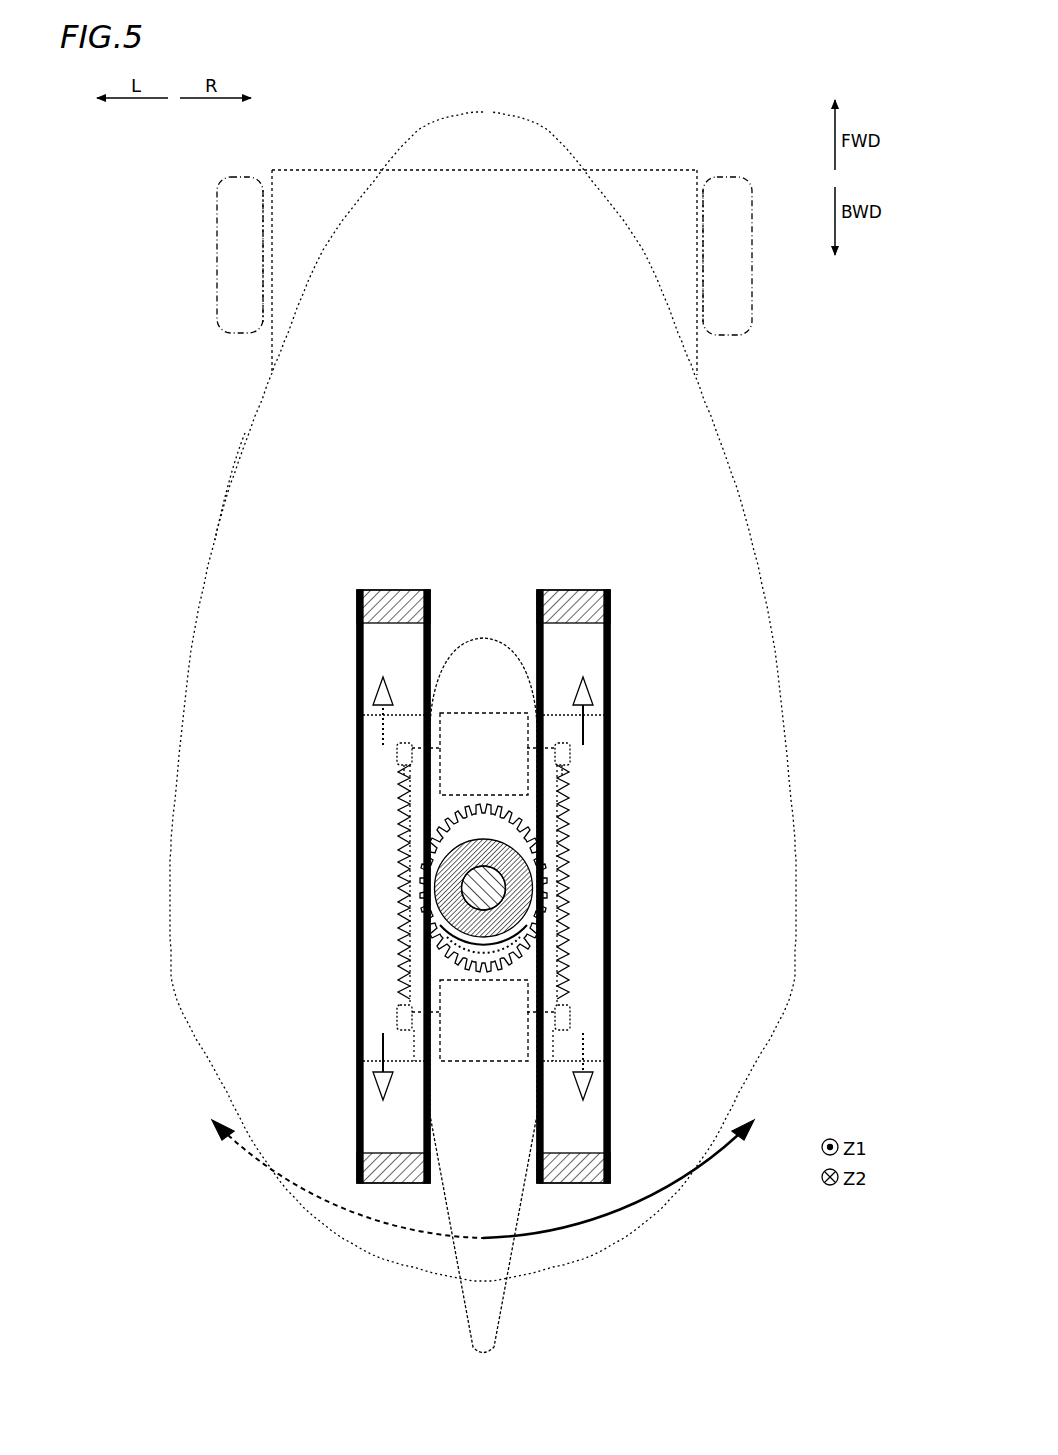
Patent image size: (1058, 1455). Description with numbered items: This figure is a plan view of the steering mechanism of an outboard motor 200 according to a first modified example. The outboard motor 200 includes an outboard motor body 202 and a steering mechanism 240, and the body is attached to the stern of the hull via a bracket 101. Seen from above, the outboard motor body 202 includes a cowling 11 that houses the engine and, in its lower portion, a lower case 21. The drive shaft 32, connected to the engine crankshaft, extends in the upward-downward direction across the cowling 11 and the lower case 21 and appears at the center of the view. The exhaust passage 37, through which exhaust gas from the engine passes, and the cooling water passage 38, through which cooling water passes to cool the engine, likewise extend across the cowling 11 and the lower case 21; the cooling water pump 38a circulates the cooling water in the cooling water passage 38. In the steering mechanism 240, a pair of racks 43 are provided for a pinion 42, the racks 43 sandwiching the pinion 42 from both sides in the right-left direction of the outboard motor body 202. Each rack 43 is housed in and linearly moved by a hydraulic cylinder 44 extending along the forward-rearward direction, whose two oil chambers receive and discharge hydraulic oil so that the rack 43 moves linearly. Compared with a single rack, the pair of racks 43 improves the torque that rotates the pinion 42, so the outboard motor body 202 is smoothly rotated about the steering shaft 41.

The cowling 11 is at (234, 463).
The outboard motor body 202 is at (205, 503).
The outboard motor 200 is at (338, 135).
The bracket 101 is at (657, 156).
The lower case 21 is at (484, 636).
The hydraulic cylinder 44 is at (347, 681).
The rack 43 is at (365, 738).
The steering mechanism 240 is at (650, 814).
The pinion 42 is at (402, 840).
The cooling water pump 38a is at (398, 757).
The cooling water passage 38 is at (396, 782).
The exhaust passage 37 is at (396, 1018).
The steering shaft 41 is at (440, 930).
The drive shaft 32 is at (440, 902).